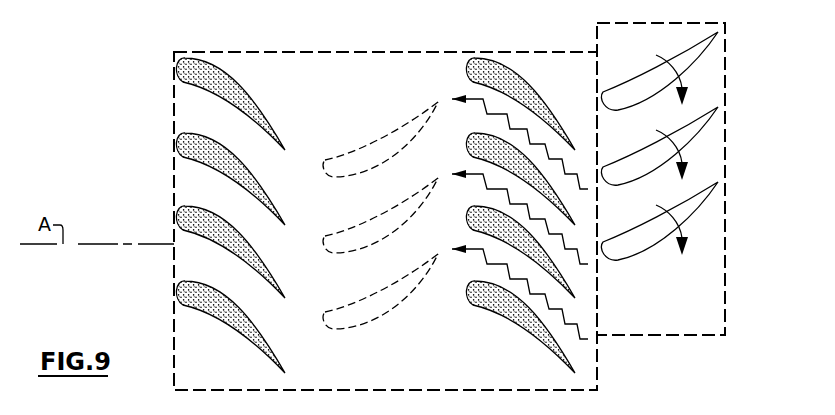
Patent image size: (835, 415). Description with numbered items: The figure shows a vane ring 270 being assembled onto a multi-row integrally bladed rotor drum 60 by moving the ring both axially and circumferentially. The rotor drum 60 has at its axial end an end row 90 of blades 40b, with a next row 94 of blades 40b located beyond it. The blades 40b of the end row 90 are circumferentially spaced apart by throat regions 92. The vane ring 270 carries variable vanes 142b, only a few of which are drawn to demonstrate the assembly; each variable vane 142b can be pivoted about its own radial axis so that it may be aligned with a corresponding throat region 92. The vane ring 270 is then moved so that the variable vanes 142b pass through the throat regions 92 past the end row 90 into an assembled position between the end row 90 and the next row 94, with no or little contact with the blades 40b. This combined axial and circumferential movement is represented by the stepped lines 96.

The multi-row integrally bladed rotor drum 60 is at (174, 103).
The next row 94 is at (248, 44).
The end row 90 is at (528, 44).
The variable vanes 142b is at (396, 320).
The blades 40b is at (518, 350).
The stepped lines 96 is at (575, 247).
The throat regions 92 is at (587, 283).
The vane ring 270 is at (732, 62).